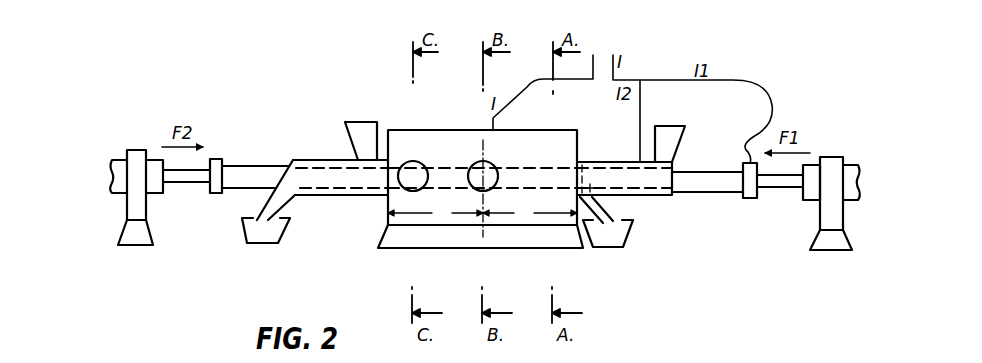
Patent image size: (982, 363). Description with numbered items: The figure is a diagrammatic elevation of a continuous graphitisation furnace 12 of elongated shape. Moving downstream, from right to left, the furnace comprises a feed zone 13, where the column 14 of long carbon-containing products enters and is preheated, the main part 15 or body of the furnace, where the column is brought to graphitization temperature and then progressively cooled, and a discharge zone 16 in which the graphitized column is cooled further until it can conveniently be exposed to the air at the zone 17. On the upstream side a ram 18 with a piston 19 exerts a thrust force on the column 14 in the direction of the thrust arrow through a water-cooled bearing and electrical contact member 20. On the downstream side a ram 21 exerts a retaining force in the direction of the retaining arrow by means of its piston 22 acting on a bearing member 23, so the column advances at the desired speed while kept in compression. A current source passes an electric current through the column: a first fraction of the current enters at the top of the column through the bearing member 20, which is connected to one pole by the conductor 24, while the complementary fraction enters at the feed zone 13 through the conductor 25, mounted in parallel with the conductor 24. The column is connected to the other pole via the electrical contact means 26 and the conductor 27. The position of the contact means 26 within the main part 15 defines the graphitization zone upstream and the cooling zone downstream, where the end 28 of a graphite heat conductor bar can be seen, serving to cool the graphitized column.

The furnace 12 is at (394, 122).
The feed zone 13 is at (633, 210).
The column of carbon-containing products 14 is at (693, 192).
The main part of the furnace 15 is at (499, 198).
The discharge zone 16 is at (364, 204).
The exposure zone 17 is at (253, 166).
The ram 18 is at (822, 164).
The piston 19 is at (780, 187).
The bearing and electrical contact member 20 is at (748, 198).
The ram 21 is at (154, 160).
The piston 22 is at (184, 182).
The bearing member 23 is at (216, 193).
The conductor 24 is at (773, 107).
The conductor 25 is at (640, 120).
The electrical contact means 26 is at (473, 163).
The conductor 27 is at (527, 87).
The end of heat conductor 28 is at (408, 161).